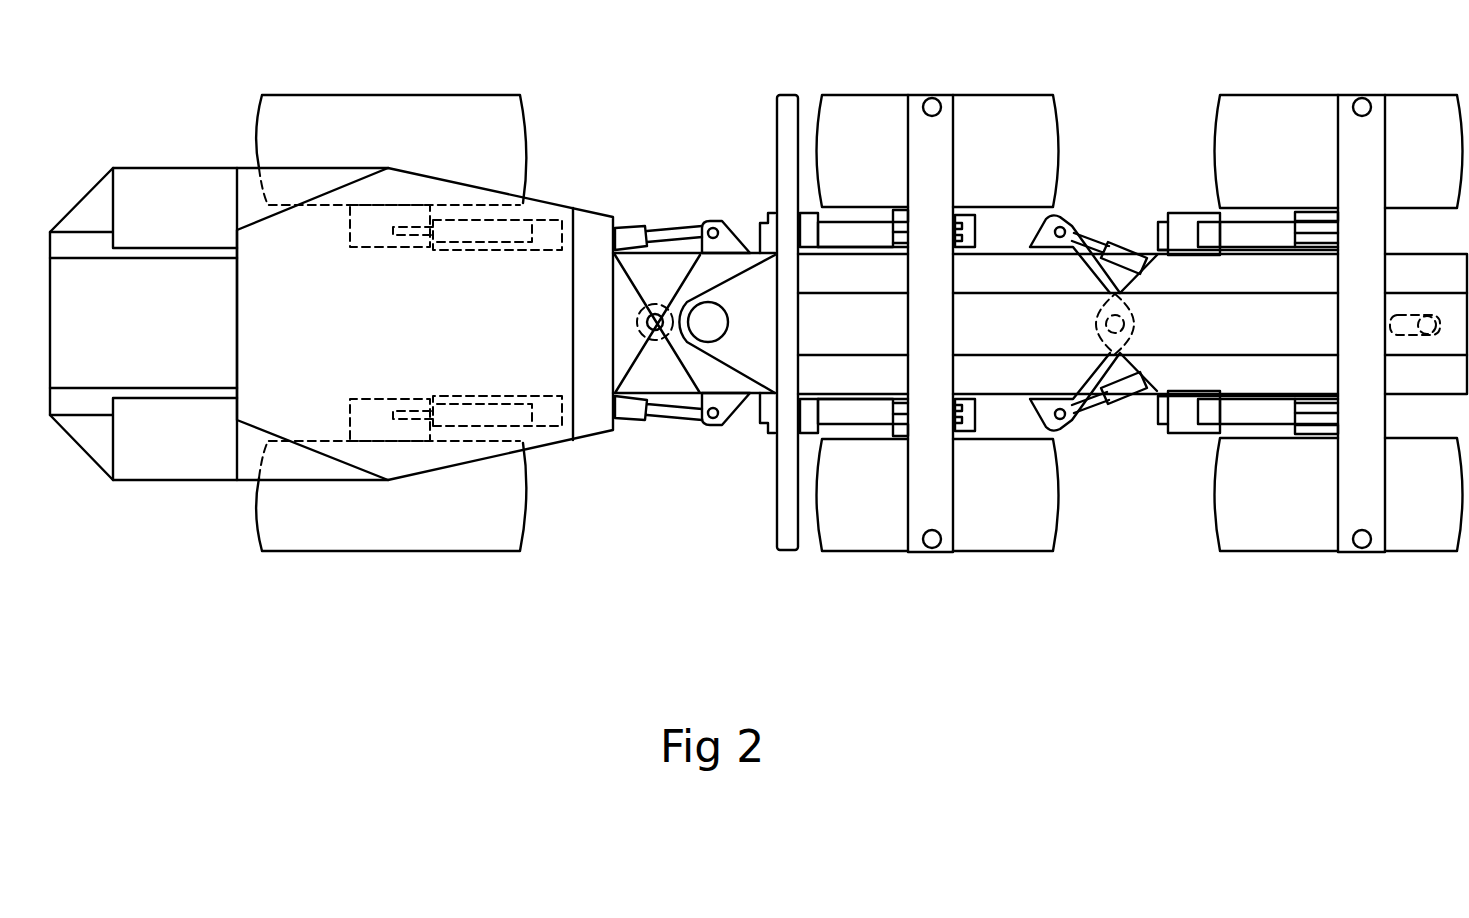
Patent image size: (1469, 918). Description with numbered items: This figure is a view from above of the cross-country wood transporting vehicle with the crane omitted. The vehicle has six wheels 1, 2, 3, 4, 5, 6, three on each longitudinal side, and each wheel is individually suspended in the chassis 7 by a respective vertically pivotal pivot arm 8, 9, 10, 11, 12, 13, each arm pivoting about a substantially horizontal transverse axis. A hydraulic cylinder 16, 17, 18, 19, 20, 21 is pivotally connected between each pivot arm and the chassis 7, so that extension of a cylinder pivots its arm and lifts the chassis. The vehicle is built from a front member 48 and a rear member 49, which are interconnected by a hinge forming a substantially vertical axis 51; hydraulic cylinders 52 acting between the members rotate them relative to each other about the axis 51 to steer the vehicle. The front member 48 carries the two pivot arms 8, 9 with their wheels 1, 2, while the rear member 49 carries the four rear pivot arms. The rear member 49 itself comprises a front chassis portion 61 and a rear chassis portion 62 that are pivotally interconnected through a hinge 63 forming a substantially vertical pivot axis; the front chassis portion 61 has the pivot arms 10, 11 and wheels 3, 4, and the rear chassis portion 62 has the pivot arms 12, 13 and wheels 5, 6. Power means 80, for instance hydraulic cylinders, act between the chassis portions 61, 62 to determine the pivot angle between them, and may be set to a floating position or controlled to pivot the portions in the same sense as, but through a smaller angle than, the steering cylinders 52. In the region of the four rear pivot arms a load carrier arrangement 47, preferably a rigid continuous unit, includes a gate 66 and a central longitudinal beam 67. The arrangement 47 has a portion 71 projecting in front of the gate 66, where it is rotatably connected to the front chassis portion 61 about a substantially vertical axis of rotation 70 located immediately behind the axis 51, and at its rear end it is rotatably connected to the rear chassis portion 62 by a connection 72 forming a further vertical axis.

The wheel 1 is at (425, 535).
The wheel 2 is at (418, 110).
The wheel 3 is at (860, 536).
The wheel 4 is at (877, 110).
The wheel 5 is at (1270, 536).
The wheel 6 is at (1275, 110).
The chassis 7 is at (572, 690).
The pivot arm 8 is at (352, 428).
The pivot arm 9 is at (352, 229).
The pivot arm 10 is at (975, 425).
The pivot arm 11 is at (975, 233).
The pivot arm 12 is at (1305, 430).
The pivot arm 13 is at (1308, 220).
The hydraulic cylinder 16 is at (460, 420).
The hydraulic cylinder 17 is at (468, 226).
The hydraulic cylinder 18 is at (862, 412).
The hydraulic cylinder 19 is at (845, 232).
The hydraulic cylinder 20 is at (1240, 412).
The hydraulic cylinder 21 is at (1252, 233).
The load carrier arrangement 47 is at (960, 327).
The front member 48 is at (162, 512).
The rear member 49 is at (1050, 605).
The vertical axis 51 is at (648, 319).
The hydraulic cylinders 52 is at (630, 229).
The front chassis portion 61 is at (1075, 218).
The rear chassis portion 62 is at (1192, 210).
The hinge 63 is at (1120, 323).
The gate 66 is at (785, 176).
The central longitudinal beam 67 is at (1230, 320).
The axis of rotation 70 is at (708, 322).
The portion 71 is at (748, 352).
The connection 72 is at (1418, 305).
The power means 80 is at (1122, 388).